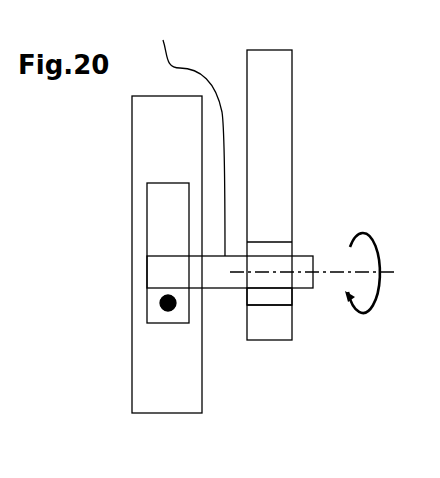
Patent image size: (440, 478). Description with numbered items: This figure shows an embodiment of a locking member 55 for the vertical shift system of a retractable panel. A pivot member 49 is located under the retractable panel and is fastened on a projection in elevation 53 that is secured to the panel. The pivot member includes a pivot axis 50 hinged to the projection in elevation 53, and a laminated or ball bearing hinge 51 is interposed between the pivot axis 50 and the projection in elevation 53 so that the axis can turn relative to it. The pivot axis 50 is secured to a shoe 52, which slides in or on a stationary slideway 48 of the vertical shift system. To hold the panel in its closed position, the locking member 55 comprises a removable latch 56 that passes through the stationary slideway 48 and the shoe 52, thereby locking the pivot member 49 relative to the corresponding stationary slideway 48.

The stationary slideway 48 is at (138, 390).
The pivot member 49 is at (280, 296).
The pivot axis 50 is at (188, 136).
The bearing hinge 51 is at (303, 249).
The shoe 52 is at (163, 219).
The projection in elevation 53 is at (274, 97).
The locking member 55 is at (112, 323).
The removable latch 56 is at (160, 303).